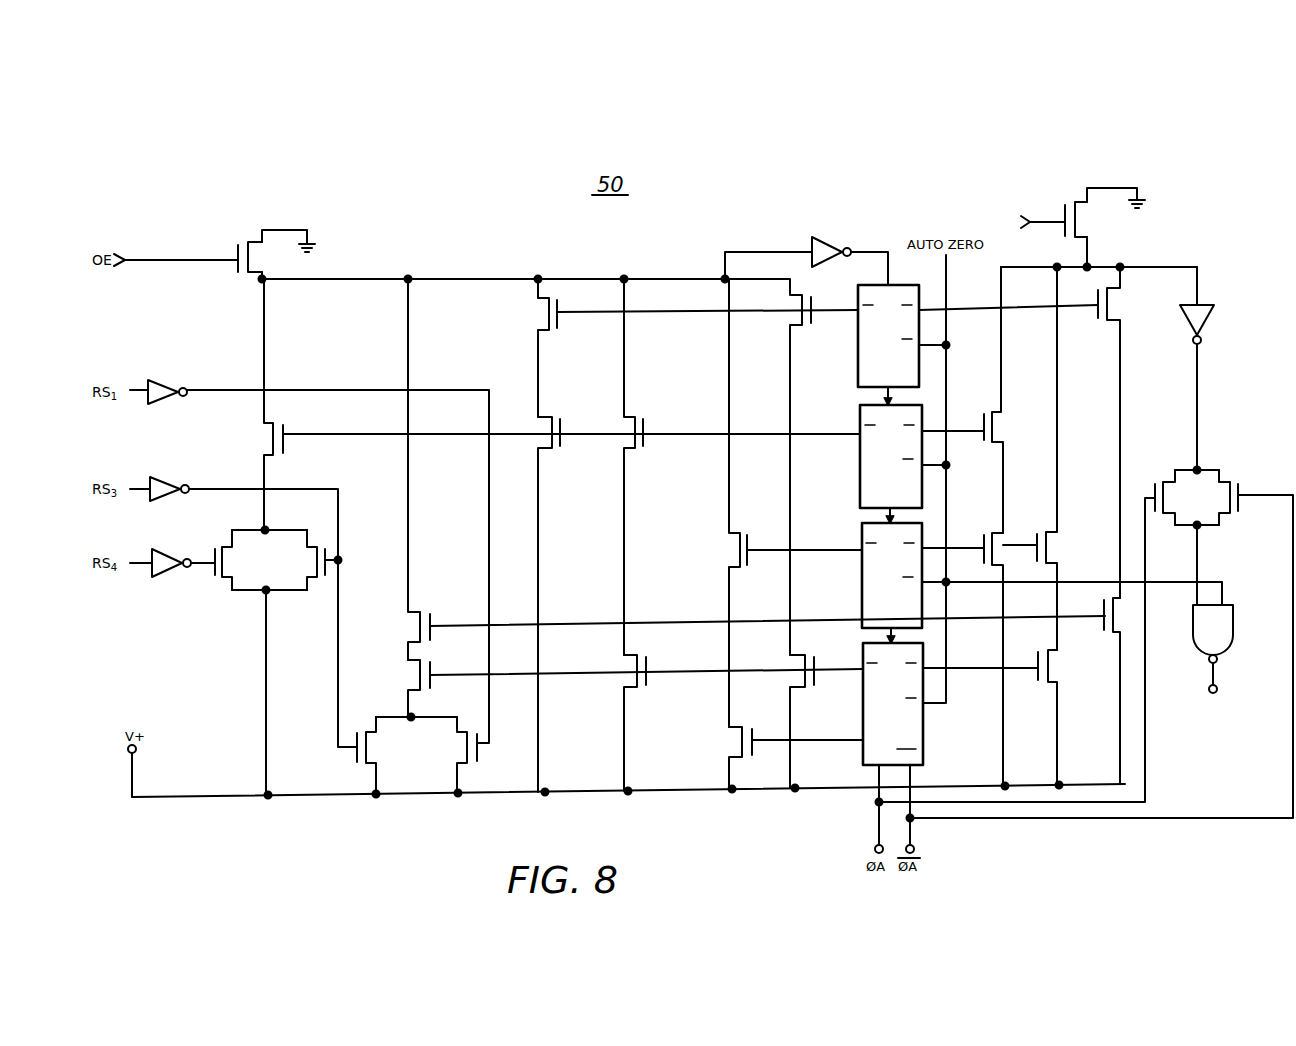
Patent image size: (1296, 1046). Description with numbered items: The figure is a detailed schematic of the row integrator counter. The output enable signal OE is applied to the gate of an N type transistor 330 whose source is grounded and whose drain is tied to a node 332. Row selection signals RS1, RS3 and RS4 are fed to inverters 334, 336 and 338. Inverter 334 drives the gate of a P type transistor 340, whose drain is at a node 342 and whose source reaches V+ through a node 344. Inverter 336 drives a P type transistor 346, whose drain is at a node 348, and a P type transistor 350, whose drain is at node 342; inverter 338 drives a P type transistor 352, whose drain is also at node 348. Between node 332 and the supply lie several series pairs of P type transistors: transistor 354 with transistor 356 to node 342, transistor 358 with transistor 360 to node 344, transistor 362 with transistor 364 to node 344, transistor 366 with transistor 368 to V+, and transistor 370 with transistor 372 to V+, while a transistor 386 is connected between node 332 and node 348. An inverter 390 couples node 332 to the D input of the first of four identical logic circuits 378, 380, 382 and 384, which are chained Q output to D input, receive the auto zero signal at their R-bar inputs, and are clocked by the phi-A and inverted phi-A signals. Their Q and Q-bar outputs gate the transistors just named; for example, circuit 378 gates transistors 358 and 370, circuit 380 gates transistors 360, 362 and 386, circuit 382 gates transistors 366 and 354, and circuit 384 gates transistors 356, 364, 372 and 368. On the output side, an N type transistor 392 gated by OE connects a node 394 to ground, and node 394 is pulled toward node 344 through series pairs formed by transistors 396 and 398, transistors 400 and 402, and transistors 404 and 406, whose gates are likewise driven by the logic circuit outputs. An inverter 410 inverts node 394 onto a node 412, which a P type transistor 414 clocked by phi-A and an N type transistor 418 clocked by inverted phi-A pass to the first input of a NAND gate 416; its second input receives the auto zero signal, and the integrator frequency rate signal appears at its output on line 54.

The line 54 is at (1219, 674).
The N type transistor 330 is at (239, 243).
The node 332 is at (468, 278).
The inverter 334 is at (160, 393).
The inverter 336 is at (172, 484).
The inverter 338 is at (165, 580).
The P type transistor 340 is at (455, 750).
The node 342 is at (432, 716).
The node 344 is at (588, 797).
The P type transistor 346 is at (322, 546).
The node 348 is at (263, 480).
The P type transistor 350 is at (361, 731).
The P type transistor 352 is at (215, 546).
The P type transistor 354 is at (408, 620).
The P type transistor 356 is at (412, 672).
The P type transistor 358 is at (528, 310).
The P type transistor 360 is at (560, 416).
The P type transistor 362 is at (642, 416).
The P type transistor 364 is at (624, 679).
The P type transistor 366 is at (716, 550).
The P type transistor 368 is at (732, 753).
The P type transistor 370 is at (797, 322).
The P type transistor 372 is at (797, 678).
The logic circuit 378 is at (875, 367).
The logic circuit 380 is at (878, 475).
The logic circuit 382 is at (877, 583).
The logic circuit 384 is at (882, 704).
The transistor 386 is at (258, 448).
The inverter 390 is at (852, 225).
The N type transistor 392 is at (1071, 200).
The node 394 is at (1068, 264).
The P type transistor 396 is at (1003, 430).
The P type transistor 398 is at (1003, 537).
The P type transistor 400 is at (1053, 553).
The P type transistor 402 is at (1060, 676).
The P type transistor 404 is at (1125, 308).
The P type transistor 406 is at (1112, 634).
The inverter 410 is at (1205, 322).
The node 412 is at (1199, 440).
The P type transistor 414 is at (1158, 481).
The NAND gate 416 is at (1212, 628).
The N type transistor 418 is at (1243, 482).